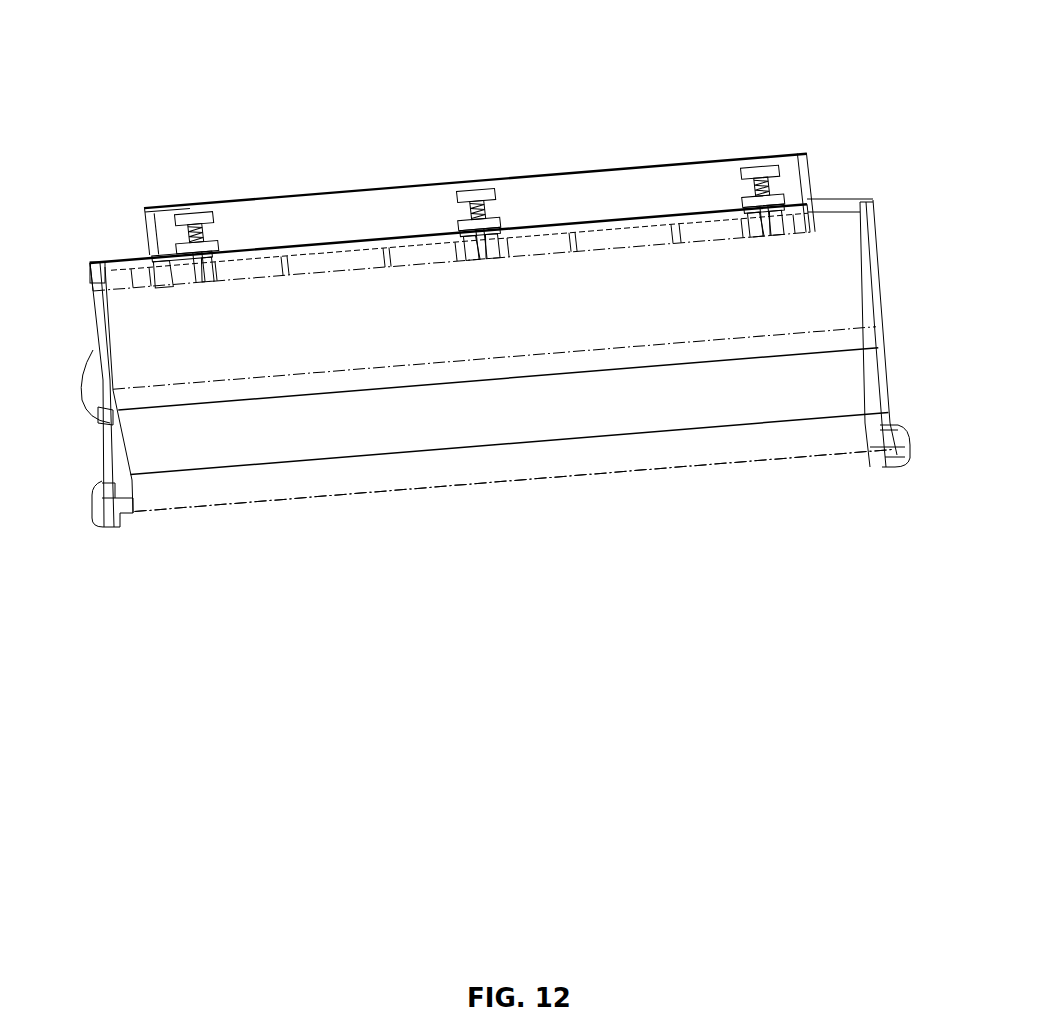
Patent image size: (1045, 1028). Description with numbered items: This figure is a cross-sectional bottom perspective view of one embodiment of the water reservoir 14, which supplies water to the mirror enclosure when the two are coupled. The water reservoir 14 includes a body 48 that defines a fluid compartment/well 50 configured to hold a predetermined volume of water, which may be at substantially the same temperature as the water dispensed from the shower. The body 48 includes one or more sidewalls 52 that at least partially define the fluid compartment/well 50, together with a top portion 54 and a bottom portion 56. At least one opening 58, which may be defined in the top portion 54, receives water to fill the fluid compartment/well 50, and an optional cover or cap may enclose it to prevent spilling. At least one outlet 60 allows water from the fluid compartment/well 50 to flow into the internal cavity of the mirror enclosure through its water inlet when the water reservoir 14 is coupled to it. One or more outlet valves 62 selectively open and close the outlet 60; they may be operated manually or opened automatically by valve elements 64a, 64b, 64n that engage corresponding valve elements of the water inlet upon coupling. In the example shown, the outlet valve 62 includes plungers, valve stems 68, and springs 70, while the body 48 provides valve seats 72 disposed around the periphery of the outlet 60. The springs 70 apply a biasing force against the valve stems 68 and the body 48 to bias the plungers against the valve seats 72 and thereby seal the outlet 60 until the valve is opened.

The water reservoir 14 is at (216, 80).
The body 48 is at (100, 408).
The fluid compartment/well 50 is at (463, 340).
The sidewall 52 is at (863, 250).
The top portion 54 is at (272, 569).
The bottom portion 56 is at (784, 89).
The opening 58 is at (553, 486).
The outlet 60 is at (842, 200).
The outlet valve 62 is at (338, 293).
The valve element 64a is at (760, 170).
The valve element 64b is at (478, 192).
The valve element 64n is at (192, 214).
The valve stem 68 is at (210, 257).
The spring 70 is at (187, 238).
The valve seat 72 is at (160, 265).